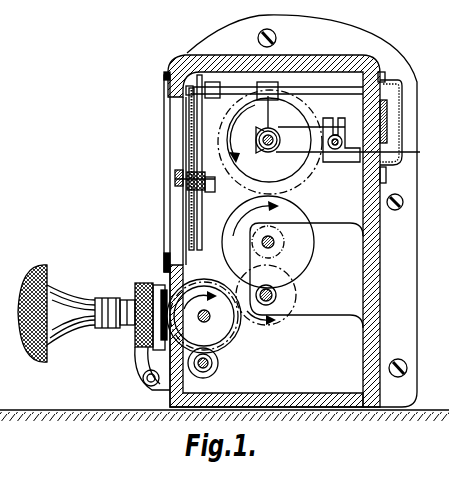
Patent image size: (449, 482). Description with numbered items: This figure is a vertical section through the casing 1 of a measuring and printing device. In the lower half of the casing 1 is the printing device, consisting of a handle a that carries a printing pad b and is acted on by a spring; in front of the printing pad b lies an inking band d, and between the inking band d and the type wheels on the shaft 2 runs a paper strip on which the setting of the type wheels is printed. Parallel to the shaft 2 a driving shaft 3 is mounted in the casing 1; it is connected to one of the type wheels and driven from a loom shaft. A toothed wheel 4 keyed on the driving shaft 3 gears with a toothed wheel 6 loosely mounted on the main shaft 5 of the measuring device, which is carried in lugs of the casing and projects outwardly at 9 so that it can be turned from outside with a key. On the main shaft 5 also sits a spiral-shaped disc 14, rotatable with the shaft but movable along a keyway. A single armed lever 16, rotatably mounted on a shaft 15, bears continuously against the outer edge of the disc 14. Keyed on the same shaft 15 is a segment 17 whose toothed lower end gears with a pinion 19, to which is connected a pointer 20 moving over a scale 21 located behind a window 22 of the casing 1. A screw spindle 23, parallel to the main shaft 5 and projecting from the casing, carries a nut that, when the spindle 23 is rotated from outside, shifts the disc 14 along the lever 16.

The casing 1 is at (313, 396).
The shaft 2 is at (208, 318).
The driving shaft 3 is at (275, 242).
The toothed wheel 4 is at (306, 266).
The main shaft 5 is at (299, 186).
The toothed wheel 6 is at (236, 195).
The outwardly projecting shaft portion 9 is at (156, 275).
The disc 14 is at (272, 145).
The shaft 15 is at (341, 92).
The single armed lever 16 is at (276, 83).
The segment 17 is at (208, 140).
The pinion 19 is at (201, 183).
The pointer 20 is at (176, 157).
The scale 21 is at (192, 231).
The window 22 is at (168, 203).
The screw spindle 23 is at (336, 150).
The handle a is at (77, 298).
The printing pad b is at (144, 283).
The inking band d is at (160, 345).